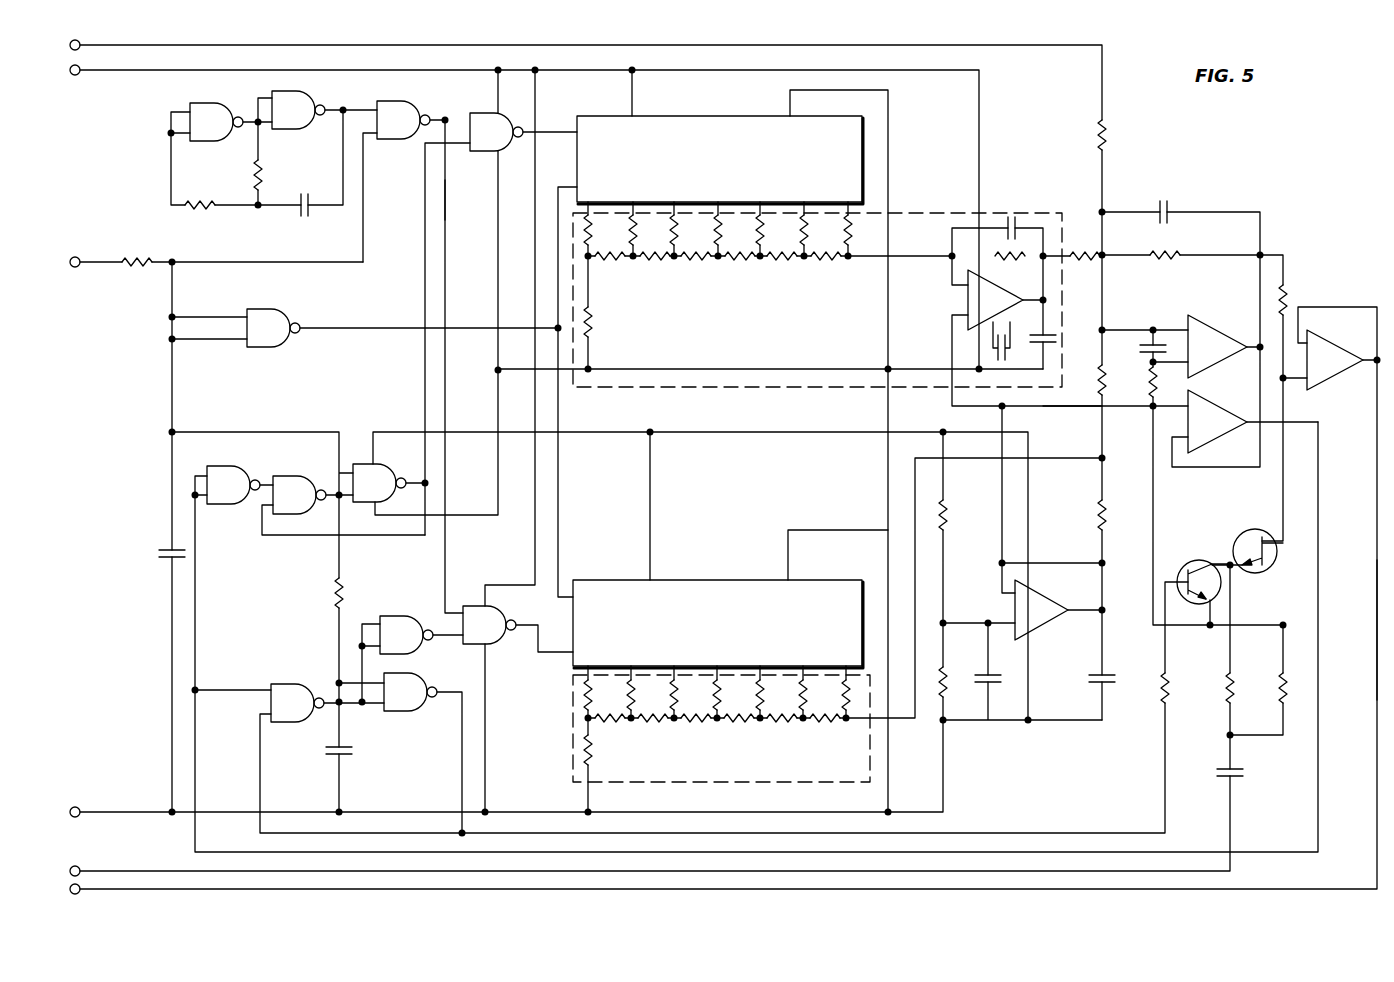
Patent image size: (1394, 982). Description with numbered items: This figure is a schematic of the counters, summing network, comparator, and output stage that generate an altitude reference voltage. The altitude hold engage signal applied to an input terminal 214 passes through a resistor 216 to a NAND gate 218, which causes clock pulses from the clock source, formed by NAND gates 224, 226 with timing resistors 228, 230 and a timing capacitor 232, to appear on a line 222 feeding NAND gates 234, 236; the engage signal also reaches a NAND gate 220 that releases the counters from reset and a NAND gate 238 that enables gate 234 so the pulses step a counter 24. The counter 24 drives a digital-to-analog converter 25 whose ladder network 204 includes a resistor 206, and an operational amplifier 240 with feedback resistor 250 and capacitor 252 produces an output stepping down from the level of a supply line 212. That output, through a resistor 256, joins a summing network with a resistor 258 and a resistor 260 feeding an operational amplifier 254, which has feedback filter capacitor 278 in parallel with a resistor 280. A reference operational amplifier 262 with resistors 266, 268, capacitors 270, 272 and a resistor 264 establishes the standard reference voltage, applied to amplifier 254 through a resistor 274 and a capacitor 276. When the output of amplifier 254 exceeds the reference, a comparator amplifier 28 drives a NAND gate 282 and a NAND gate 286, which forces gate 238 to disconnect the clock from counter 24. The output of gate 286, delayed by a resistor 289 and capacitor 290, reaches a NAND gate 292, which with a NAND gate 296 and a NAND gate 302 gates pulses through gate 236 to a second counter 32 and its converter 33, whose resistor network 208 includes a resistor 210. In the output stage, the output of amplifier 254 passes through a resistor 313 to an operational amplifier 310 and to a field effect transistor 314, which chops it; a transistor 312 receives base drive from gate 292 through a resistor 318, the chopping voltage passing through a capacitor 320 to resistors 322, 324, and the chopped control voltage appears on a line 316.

The supply line 212 is at (120, 72).
The input terminal 214 is at (85, 258).
The resistor 216 is at (140, 258).
The NAND gate 218 is at (400, 117).
The NAND gate 220 is at (282, 318).
The line 222 is at (450, 212).
The NAND gate 224 is at (213, 120).
The NAND gate 226 is at (300, 112).
The resistor 228 is at (200, 202).
The resistor 230 is at (252, 170).
The timing capacitor 232 is at (303, 200).
The NAND gate 234 is at (485, 128).
The NAND gate 236 is at (480, 615).
The NAND gate 238 is at (365, 470).
The counter 24 is at (735, 118).
The counter 32 is at (730, 580).
The resistor ladder network 204 is at (752, 293).
The resistor 206 is at (598, 325).
The resistor network 208 is at (770, 755).
The resistor 210 is at (592, 755).
The digital-to-analog converter 25 is at (762, 388).
The digital-to-analog converter 33 is at (573, 733).
The operational amplifier 240 is at (968, 300).
The resistor 250 is at (1000, 256).
The capacitor 252 is at (1015, 222).
The operational amplifier 254 is at (1215, 335).
The resistor 256 is at (1082, 239).
The resistor 258 is at (1110, 130).
The resistor 260 is at (1102, 385).
The operational amplifier 262 is at (1040, 620).
The resistor 264 is at (1096, 510).
The resistor 266 is at (960, 510).
The resistor 268 is at (947, 680).
The capacitor 270 is at (996, 684).
The capacitor 272 is at (1094, 683).
The resistor 274 is at (1150, 388).
The capacitor 276 is at (1145, 347).
The filter capacitor 278 is at (1170, 208).
The resistor 280 is at (1165, 258).
The NAND gate 282 is at (232, 482).
The NAND gate 286 is at (300, 490).
The resistor 289 is at (335, 592).
The capacitor 290 is at (347, 756).
The NAND gate 292 is at (405, 698).
The NAND gate 296 is at (290, 700).
The NAND gate 302 is at (400, 635).
The comparator amplifier 28 is at (1220, 415).
The operational amplifier 310 is at (1335, 360).
The transistor 312 is at (1185, 565).
The resistor 313 is at (1286, 290).
The field effect transistor 314 is at (1245, 535).
The line 316 is at (1375, 615).
The resistor 318 is at (1160, 700).
The capacitor 320 is at (1237, 778).
The resistor 322 is at (1225, 698).
The resistor 324 is at (1280, 698).